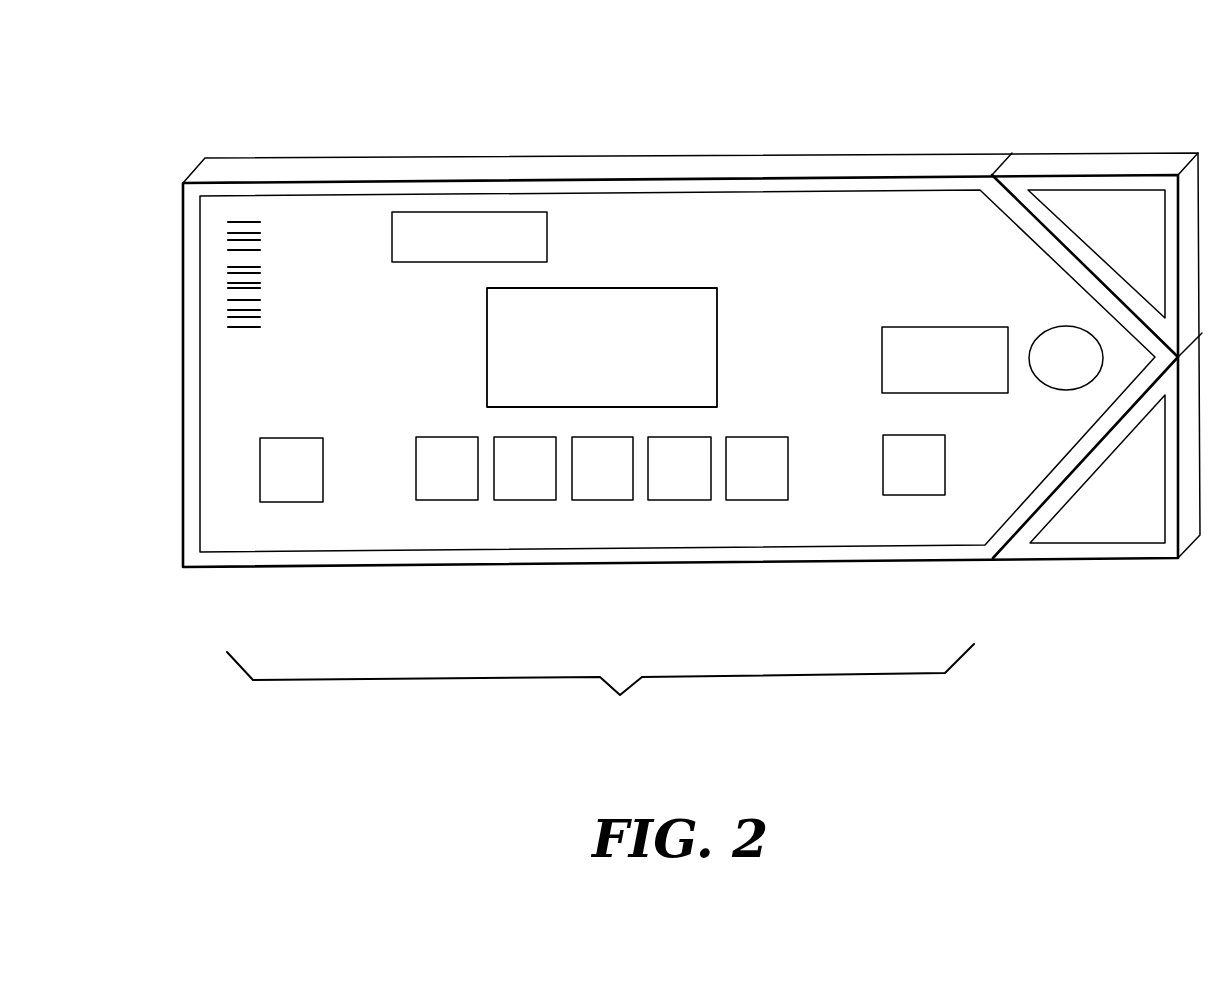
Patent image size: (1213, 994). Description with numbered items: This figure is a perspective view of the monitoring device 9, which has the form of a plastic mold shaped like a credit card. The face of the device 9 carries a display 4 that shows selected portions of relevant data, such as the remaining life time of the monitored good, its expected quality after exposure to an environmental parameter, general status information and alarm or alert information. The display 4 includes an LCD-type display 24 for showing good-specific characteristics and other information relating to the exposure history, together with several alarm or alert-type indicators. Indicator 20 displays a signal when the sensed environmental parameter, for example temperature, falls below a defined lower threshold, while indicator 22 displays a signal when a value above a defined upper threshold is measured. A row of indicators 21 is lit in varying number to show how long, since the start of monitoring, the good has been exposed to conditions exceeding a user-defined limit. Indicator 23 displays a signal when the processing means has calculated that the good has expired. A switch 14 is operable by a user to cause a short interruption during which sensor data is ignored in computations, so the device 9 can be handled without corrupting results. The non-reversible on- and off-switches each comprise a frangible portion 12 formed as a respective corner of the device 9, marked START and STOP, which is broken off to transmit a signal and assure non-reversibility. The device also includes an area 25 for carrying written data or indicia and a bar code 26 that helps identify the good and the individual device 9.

The device 9 is at (572, 72).
The frangible portion 12 is at (1108, 193).
The switch 14 is at (1062, 373).
The indicator 20 is at (290, 488).
The indicators 21 is at (443, 490).
The indicator 22 is at (911, 487).
The indicator 23 is at (928, 340).
The display 24 is at (653, 303).
The area 25 is at (418, 225).
The bar code 26 is at (248, 222).
The display 4 is at (600, 691).